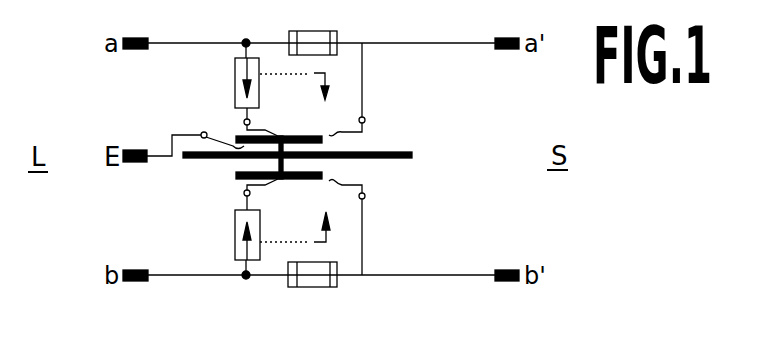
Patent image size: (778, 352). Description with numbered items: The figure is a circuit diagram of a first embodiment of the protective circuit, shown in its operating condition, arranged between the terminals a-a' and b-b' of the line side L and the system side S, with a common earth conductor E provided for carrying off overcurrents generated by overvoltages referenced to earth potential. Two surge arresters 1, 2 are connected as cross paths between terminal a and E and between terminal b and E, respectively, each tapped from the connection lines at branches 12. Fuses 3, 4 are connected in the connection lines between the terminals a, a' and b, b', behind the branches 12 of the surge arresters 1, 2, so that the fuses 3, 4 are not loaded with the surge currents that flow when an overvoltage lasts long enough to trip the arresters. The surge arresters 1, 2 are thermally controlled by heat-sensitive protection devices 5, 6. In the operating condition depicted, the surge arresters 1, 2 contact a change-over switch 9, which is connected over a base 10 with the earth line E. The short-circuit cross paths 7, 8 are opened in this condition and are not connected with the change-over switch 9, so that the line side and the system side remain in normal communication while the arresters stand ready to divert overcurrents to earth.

The surge arrester 1 is at (235, 86).
The surge arrester 2 is at (235, 237).
The fuse 3 is at (313, 35).
The fuse 4 is at (314, 283).
The heat-sensitive protection device 5 is at (317, 73).
The heat-sensitive protection device 6 is at (318, 242).
The short-circuit cross path 7 is at (364, 84).
The short-circuit cross path 8 is at (364, 226).
The change-over switch 9 is at (304, 137).
The base 10 is at (388, 151).
The branch 12 is at (246, 37).